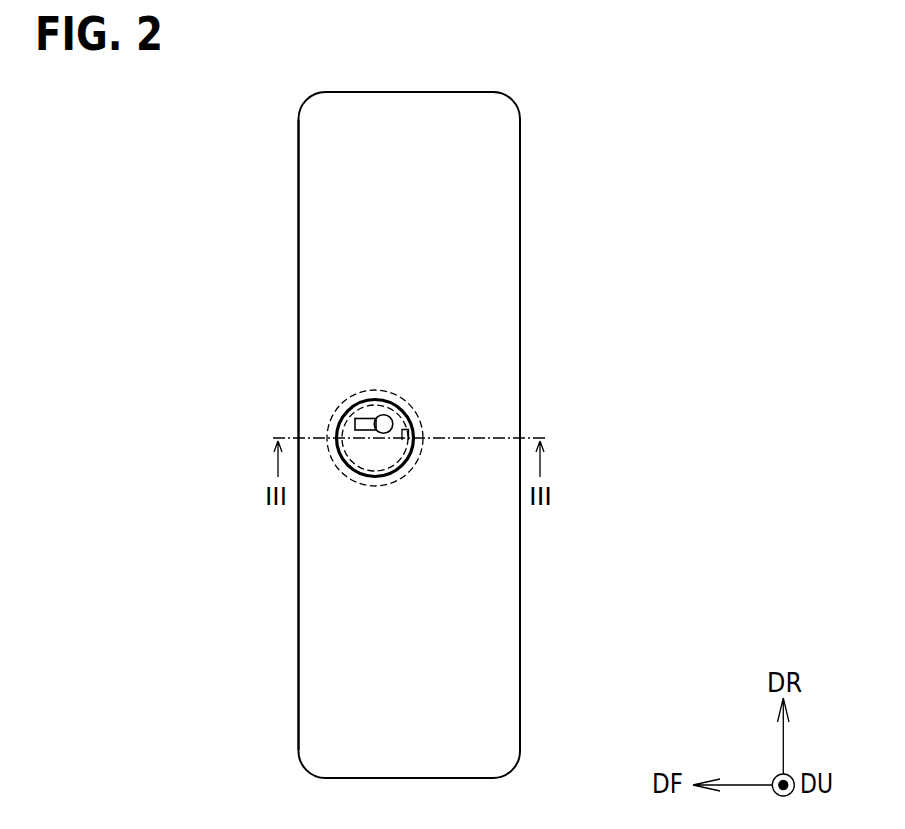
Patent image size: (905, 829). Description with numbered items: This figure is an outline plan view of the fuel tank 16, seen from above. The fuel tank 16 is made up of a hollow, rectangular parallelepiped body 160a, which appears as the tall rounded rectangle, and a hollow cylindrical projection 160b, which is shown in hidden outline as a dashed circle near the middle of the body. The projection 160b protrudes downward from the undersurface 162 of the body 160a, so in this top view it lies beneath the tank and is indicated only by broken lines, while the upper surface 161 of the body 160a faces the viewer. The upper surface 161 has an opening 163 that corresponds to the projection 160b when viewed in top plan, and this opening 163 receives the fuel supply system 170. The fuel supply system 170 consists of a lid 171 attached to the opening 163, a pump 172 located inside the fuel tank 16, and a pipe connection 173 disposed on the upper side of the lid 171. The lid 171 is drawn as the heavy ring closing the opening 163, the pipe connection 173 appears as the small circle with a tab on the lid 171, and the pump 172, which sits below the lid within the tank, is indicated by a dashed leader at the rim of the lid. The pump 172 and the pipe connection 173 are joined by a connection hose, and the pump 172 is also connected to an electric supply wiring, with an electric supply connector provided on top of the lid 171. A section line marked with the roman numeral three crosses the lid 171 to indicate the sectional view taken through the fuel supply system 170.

The fuel tank 16 is at (588, 123).
The body 160a is at (298, 648).
The projection 160b is at (347, 480).
The upper surface 161 is at (499, 647).
The undersurface 162 is at (498, 648).
The opening 163 is at (338, 405).
The fuel supply system 170 is at (487, 407).
The lid 171 is at (410, 417).
The pump 172 is at (409, 430).
The pipe connection 173 is at (385, 414).